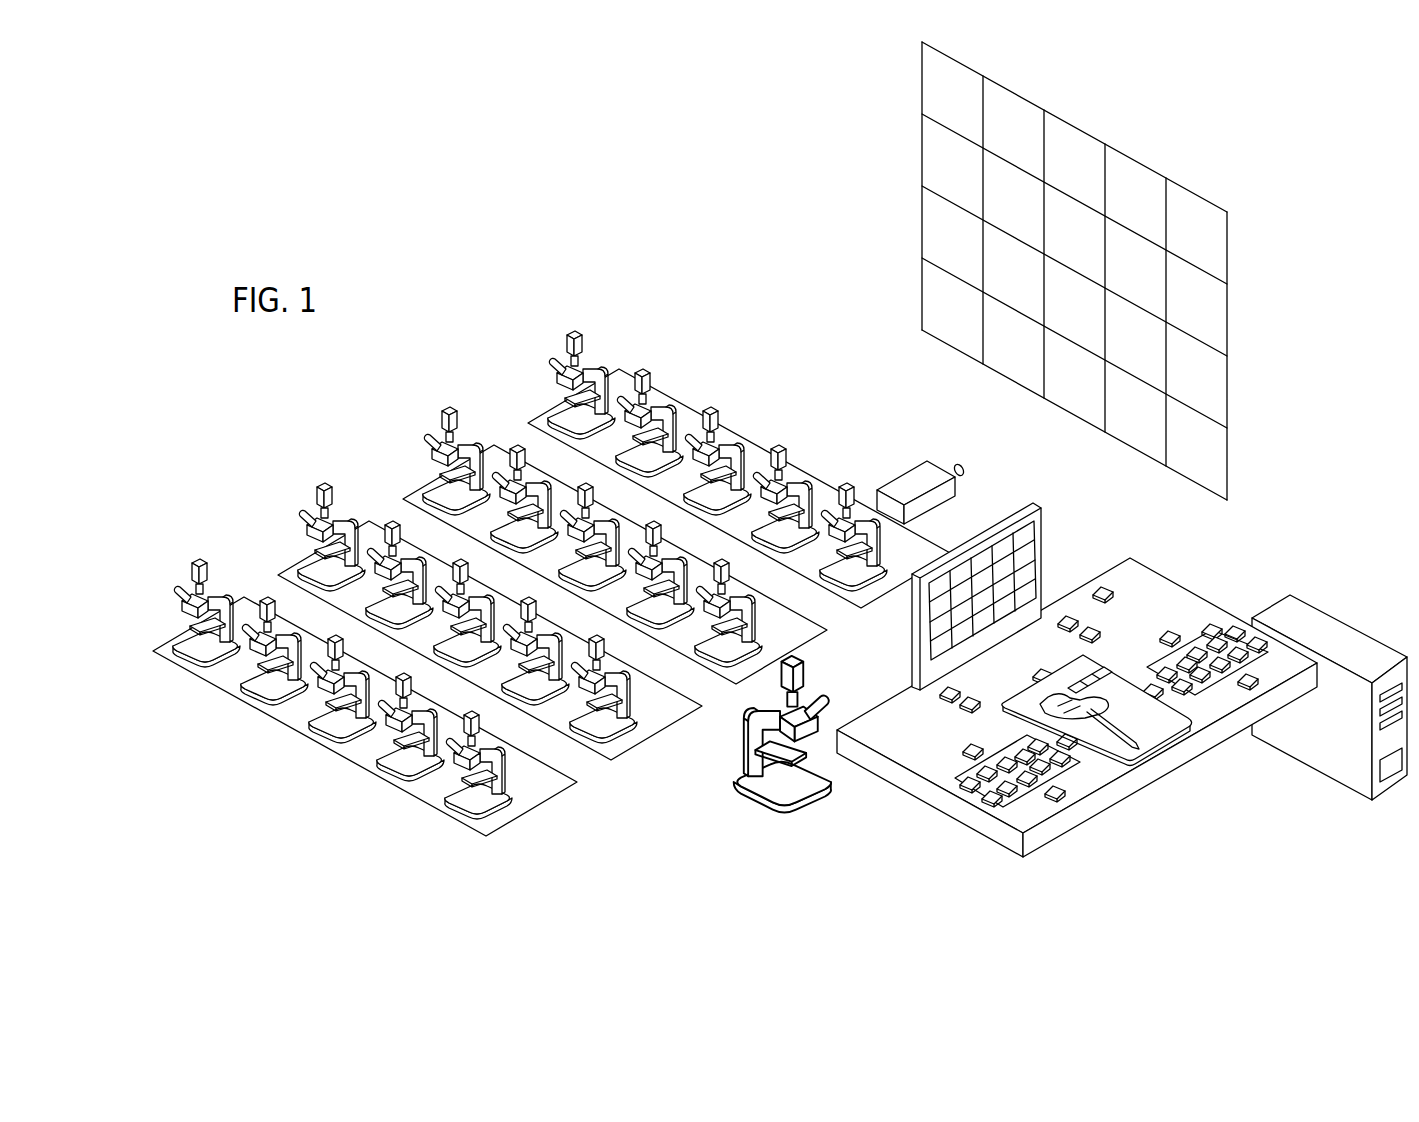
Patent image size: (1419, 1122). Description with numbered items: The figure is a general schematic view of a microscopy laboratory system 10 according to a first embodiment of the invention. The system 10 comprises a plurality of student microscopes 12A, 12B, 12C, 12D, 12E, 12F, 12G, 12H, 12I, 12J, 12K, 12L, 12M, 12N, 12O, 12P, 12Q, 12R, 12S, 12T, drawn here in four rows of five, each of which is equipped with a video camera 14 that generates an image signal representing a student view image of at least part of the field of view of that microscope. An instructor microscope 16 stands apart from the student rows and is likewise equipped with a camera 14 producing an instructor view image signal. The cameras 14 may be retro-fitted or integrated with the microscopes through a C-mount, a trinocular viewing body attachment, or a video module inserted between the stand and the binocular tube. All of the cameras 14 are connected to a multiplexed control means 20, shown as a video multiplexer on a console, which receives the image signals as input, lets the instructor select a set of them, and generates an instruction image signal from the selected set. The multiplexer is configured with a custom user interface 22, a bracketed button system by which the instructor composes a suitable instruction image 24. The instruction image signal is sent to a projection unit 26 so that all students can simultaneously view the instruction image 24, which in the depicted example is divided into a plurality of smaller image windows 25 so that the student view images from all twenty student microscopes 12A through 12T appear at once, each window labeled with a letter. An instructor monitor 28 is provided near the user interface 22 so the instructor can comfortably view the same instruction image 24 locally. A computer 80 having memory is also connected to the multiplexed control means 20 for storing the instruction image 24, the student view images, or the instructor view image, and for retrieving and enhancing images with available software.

The microscopy laboratory system 10 is at (486, 227).
The student microscope 12A is at (588, 389).
The student microscope 12B is at (656, 427).
The student microscope 12C is at (724, 465).
The student microscope 12D is at (792, 503).
The student microscope 12E is at (876, 550).
The student microscope 12F is at (463, 465).
The student microscope 12G is at (531, 503).
The student microscope 12H is at (599, 541).
The student microscope 12I is at (664, 579).
The student microscope 12J is at (734, 617).
The student microscope 12K is at (338, 541).
The student microscope 12L is at (405, 579).
The student microscope 12M is at (475, 617).
The student microscope 12N is at (542, 655).
The student microscope 12O is at (610, 693).
The student microscope 12P is at (213, 617).
The student microscope 12Q is at (281, 655).
The student microscope 12R is at (349, 693).
The student microscope 12S is at (417, 731).
The student microscope 12T is at (485, 769).
The video camera 14 is at (803, 667).
The instructor microscope 16 is at (746, 745).
The multiplexed control means 20 is at (1212, 574).
The user interface 22 is at (1007, 676).
The instruction image 24 is at (1017, 271).
The image window 25 is at (932, 296).
The projection unit 26 is at (906, 482).
The instructor monitor 28 is at (1043, 545).
The computer 80 is at (1316, 745).